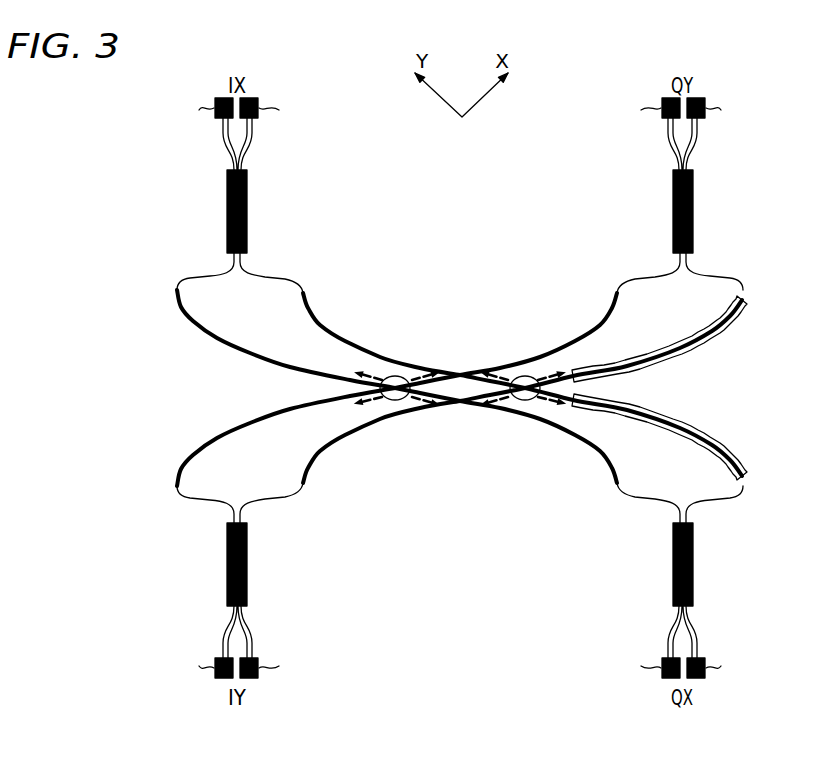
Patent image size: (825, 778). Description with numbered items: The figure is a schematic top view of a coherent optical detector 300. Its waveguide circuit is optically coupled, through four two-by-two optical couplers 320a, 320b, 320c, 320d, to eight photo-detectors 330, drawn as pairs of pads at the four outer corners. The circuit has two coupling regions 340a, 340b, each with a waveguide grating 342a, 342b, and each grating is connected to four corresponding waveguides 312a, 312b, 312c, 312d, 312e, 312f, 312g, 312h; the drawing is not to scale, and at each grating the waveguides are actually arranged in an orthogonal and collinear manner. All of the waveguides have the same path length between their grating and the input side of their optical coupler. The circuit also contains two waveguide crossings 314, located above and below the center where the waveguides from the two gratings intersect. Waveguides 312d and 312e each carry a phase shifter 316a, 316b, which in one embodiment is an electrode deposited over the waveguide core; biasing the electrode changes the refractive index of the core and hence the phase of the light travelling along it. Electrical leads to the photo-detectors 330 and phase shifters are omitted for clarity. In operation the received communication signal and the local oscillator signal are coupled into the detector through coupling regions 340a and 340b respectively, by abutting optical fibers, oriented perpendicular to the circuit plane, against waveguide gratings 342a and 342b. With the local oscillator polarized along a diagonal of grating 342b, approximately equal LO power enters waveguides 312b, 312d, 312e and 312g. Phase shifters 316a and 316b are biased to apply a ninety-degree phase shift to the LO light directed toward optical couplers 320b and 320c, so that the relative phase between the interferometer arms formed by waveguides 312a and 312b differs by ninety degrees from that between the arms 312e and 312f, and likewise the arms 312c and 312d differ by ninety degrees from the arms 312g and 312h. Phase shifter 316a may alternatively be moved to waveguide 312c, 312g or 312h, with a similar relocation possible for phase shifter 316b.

The detector 300 is at (77, 98).
The waveguide 312a is at (186, 319).
The waveguide 312b is at (313, 312).
The waveguide 312c is at (607, 312).
The waveguide 312d is at (746, 296).
The waveguide 312e is at (746, 480).
The waveguide 312f is at (607, 464).
The waveguide 312g is at (313, 464).
The waveguide 312h is at (186, 457).
The waveguide crossing 314 is at (460, 406).
The phase shifter 316a is at (708, 344).
The phase shifter 316b is at (708, 432).
The optical coupler 320a is at (248, 212).
The optical coupler 320b is at (693, 212).
The optical coupler 320c is at (693, 572).
The optical coupler 320d is at (248, 572).
The photo-detector 330 is at (460, 389).
The coupling region 340a is at (395, 400).
The coupling region 340b is at (525, 400).
The waveguide grating 342a is at (397, 376).
The waveguide grating 342b is at (527, 376).